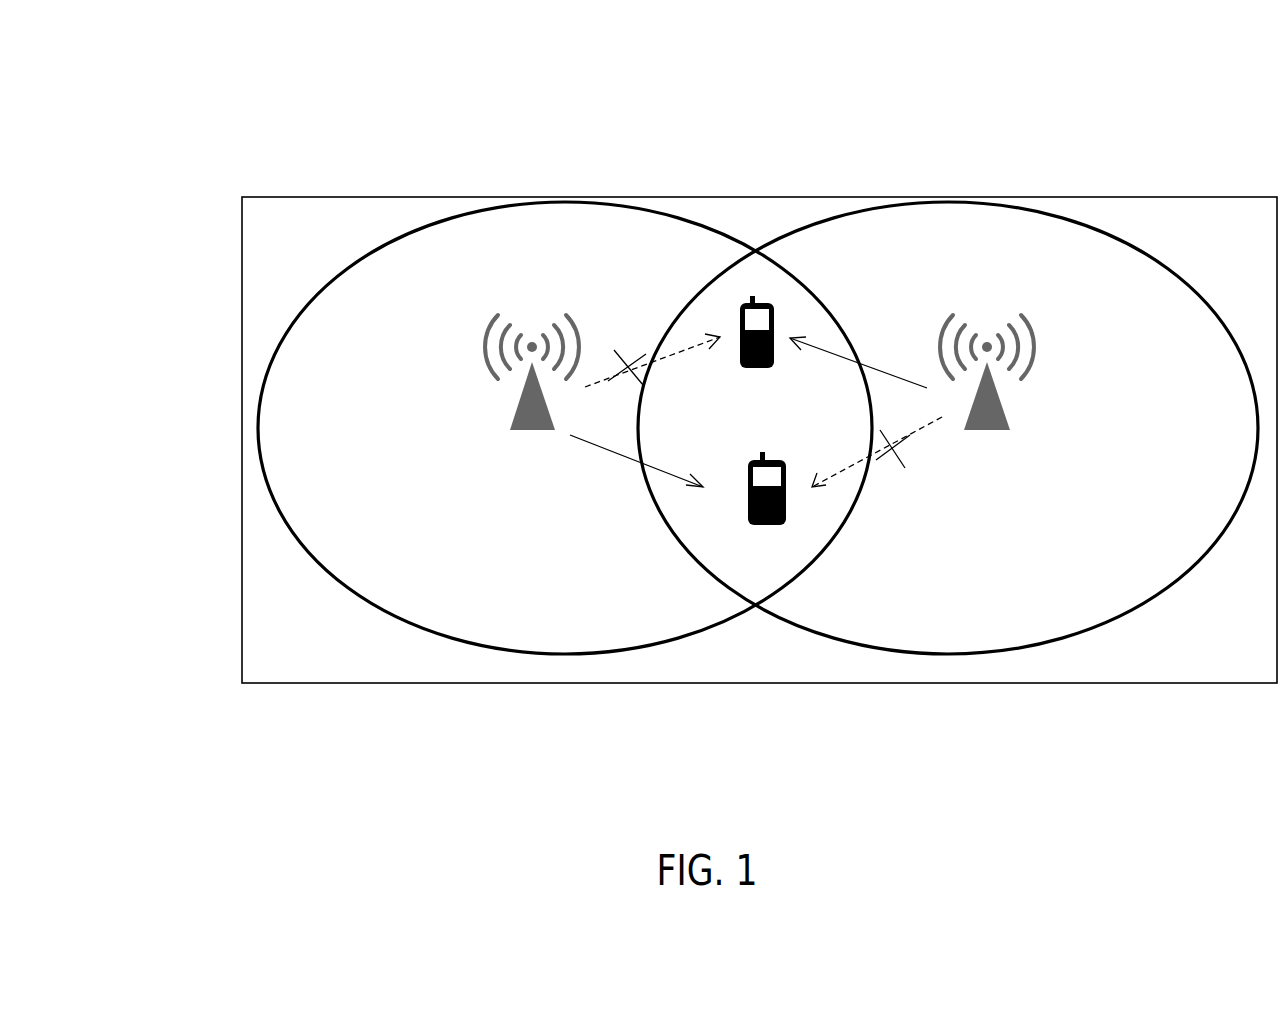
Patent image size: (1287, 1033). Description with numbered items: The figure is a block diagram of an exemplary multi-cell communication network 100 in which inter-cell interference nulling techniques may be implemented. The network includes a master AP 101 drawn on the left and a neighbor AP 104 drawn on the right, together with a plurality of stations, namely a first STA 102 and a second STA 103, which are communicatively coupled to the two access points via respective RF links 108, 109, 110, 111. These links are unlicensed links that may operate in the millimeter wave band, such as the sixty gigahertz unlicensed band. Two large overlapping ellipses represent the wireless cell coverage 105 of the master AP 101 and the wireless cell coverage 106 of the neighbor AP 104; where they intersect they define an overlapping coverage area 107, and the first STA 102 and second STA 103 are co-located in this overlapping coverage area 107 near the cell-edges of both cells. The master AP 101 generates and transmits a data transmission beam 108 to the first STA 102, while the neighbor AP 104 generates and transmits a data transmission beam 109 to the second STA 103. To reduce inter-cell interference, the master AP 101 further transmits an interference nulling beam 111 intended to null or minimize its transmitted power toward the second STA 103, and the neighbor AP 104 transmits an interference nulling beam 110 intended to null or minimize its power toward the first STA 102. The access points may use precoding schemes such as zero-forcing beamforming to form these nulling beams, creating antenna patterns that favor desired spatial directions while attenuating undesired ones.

The multi-cell communication network 100 is at (76, 41).
The master AP 101 is at (485, 345).
The first STA 102 is at (760, 557).
The second STA 103 is at (787, 325).
The neighbor AP 104 is at (1027, 363).
The wireless cell coverage of the MAP 105 is at (533, 200).
The wireless cell coverage of the NAP 106 is at (1048, 210).
The overlapping coverage area 107 is at (752, 275).
The data transmission beam 108 is at (610, 460).
The data transmission beam 109 is at (863, 362).
The interference nulling beam 110 is at (907, 440).
The interference nulling beam 111 is at (627, 350).